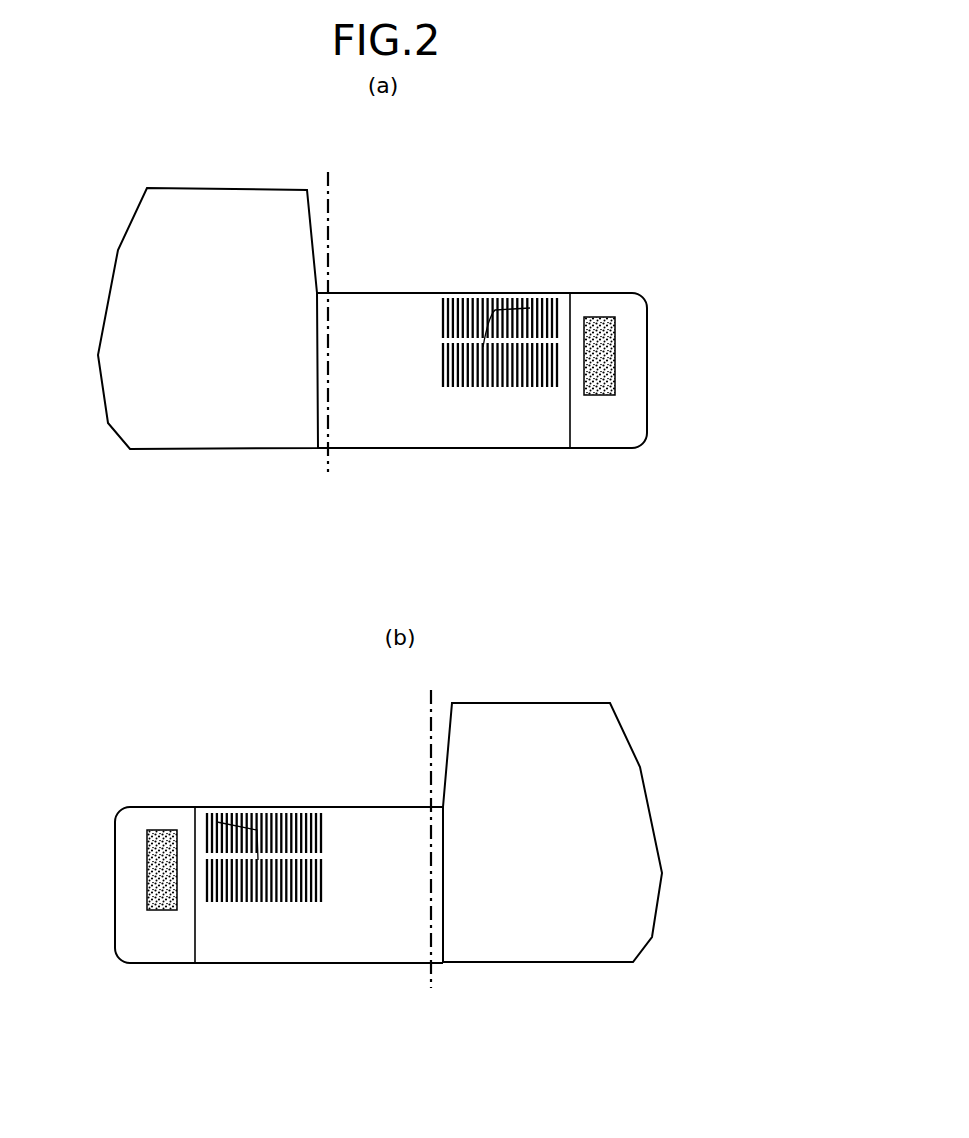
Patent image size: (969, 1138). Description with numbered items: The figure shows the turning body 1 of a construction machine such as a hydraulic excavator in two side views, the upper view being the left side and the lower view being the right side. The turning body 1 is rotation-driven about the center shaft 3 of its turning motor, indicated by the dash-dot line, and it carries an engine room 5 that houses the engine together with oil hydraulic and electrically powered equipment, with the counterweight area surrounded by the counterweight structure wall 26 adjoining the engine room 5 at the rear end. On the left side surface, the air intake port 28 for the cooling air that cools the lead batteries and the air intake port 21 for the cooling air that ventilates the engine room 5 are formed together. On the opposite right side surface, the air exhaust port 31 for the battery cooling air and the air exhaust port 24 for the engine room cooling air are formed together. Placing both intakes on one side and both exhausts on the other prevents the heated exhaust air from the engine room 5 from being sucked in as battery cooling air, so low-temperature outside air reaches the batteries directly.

The turning body 1 is at (233, 424).
The center shaft 3 is at (330, 227).
The engine room 5 is at (390, 430).
The air intake port 21 is at (475, 300).
The air exhaust port 24 is at (270, 825).
The counterweight structure wall 26 is at (597, 423).
The air intake port 28 is at (600, 343).
The air exhaust port 31 is at (160, 830).